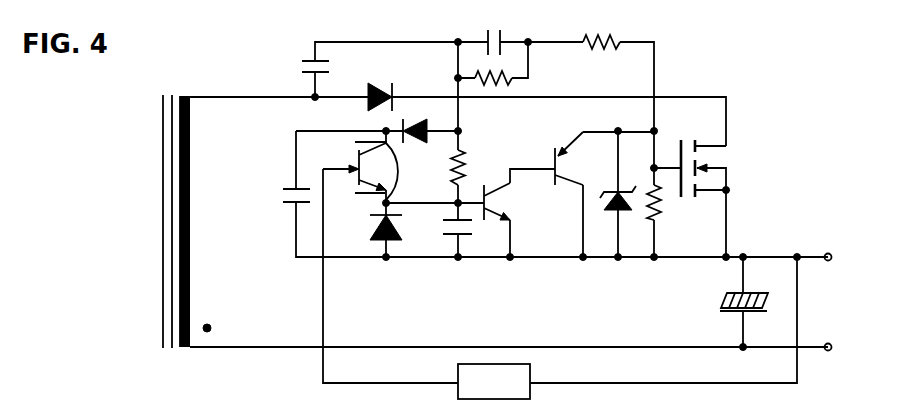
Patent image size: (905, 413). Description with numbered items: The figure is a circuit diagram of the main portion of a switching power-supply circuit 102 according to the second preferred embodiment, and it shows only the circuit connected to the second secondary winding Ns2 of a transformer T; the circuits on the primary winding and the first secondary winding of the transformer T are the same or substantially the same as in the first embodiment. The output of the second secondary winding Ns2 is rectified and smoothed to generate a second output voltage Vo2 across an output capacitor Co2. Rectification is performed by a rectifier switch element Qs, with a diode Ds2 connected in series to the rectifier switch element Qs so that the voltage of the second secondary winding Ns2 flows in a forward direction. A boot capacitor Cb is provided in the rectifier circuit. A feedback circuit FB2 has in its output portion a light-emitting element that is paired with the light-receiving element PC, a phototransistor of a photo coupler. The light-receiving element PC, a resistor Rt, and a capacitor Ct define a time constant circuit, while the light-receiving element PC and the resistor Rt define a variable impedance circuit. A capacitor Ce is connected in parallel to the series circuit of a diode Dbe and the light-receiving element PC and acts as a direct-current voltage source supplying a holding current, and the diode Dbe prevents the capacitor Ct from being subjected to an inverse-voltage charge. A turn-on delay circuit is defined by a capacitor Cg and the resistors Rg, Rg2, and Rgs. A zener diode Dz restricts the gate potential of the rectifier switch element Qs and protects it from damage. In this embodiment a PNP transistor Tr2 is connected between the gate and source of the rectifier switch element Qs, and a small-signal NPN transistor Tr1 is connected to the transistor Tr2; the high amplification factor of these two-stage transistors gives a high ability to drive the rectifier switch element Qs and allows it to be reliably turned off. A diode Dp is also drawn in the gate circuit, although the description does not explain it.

The transformer T is at (168, 84).
The second secondary winding Ns2 is at (205, 221).
The boot capacitor Cb is at (298, 67).
The diode Ds2 is at (380, 86).
The capacitor Cg is at (492, 31).
The resistor Rg is at (601, 28).
The resistor Rg2 is at (512, 86).
The diode Dp is at (432, 121).
The light-receiving element PC is at (355, 169).
The capacitor Ce is at (280, 195).
The diode Dbe is at (367, 228).
The resistor Rt is at (441, 167).
The capacitor Ct is at (444, 227).
The NPN transistor Tr1 is at (499, 226).
The PNP transistor Tr2 is at (571, 190).
The zener diode Dz is at (628, 215).
The resistor Rgs is at (674, 206).
The rectifier switch element Qs is at (696, 152).
The capacitor Co2 is at (721, 295).
The second output voltage Vo2 is at (834, 257).
The feedback circuit FB2 is at (494, 381).
The switching power-supply circuit 102 is at (800, 47).